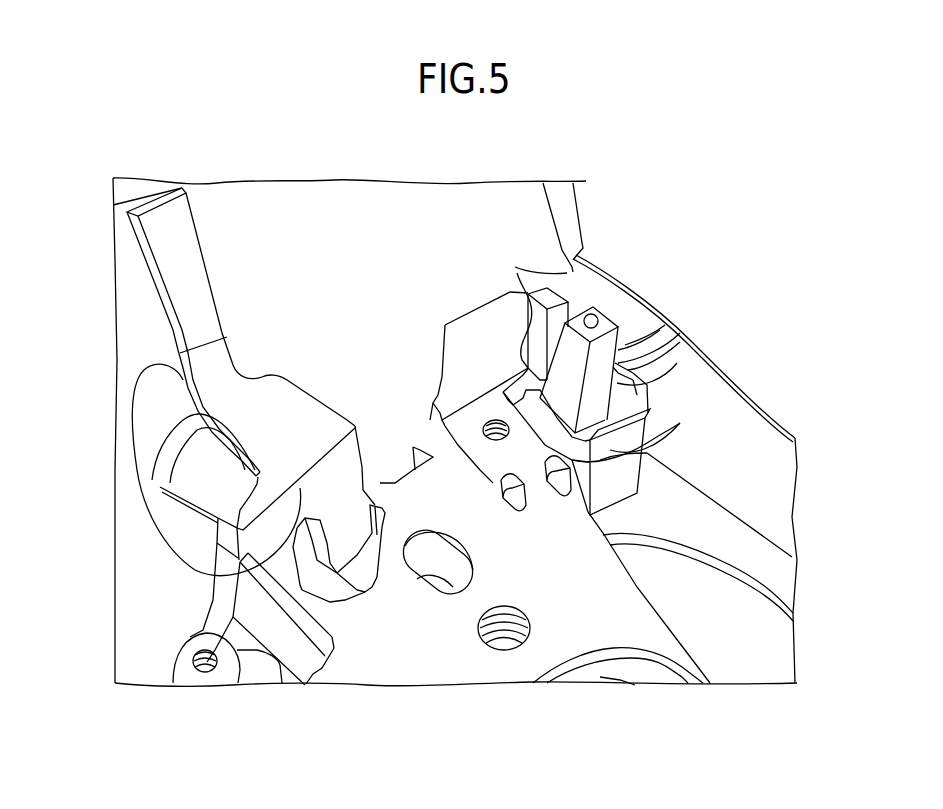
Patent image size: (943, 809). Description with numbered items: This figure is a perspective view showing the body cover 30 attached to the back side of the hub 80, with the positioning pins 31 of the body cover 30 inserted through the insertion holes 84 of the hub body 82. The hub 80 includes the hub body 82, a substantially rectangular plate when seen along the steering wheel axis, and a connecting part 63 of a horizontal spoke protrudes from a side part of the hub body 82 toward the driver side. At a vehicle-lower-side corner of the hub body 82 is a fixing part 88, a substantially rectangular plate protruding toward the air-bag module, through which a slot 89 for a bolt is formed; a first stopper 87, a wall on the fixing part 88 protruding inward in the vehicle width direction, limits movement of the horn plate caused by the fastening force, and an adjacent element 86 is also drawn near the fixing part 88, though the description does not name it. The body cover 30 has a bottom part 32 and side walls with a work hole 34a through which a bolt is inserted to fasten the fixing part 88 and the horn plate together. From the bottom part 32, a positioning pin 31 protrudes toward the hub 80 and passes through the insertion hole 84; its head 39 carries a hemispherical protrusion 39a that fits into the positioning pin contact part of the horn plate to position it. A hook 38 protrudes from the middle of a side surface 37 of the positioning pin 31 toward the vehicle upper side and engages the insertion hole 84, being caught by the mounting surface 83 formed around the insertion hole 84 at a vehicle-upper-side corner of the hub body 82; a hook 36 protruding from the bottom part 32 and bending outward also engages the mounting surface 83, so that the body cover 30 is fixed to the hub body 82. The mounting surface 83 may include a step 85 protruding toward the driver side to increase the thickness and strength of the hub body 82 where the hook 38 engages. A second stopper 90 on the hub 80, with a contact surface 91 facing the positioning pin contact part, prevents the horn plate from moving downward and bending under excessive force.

The body cover 30 is at (733, 427).
The positioning pin 31 is at (626, 325).
The bottom part 32 is at (737, 537).
The work hole 34a is at (196, 462).
The hook 36 is at (645, 415).
The side surface 37 is at (630, 345).
The hook 38 is at (640, 365).
The head 39 is at (607, 340).
The hemispherical protrusion 39a is at (605, 300).
The connecting part 63 is at (210, 349).
The hub 80 is at (697, 628).
The hub body 82 is at (625, 593).
The mounting surface 83 is at (647, 453).
The insertion hole 84 is at (655, 400).
The step 85 is at (665, 372).
The holder 86 is at (352, 623).
The first stopper 87 is at (281, 612).
The fixing part 88 is at (217, 540).
The slot 89 is at (233, 613).
The second stopper 90 is at (565, 257).
The contact surface 91 is at (592, 315).